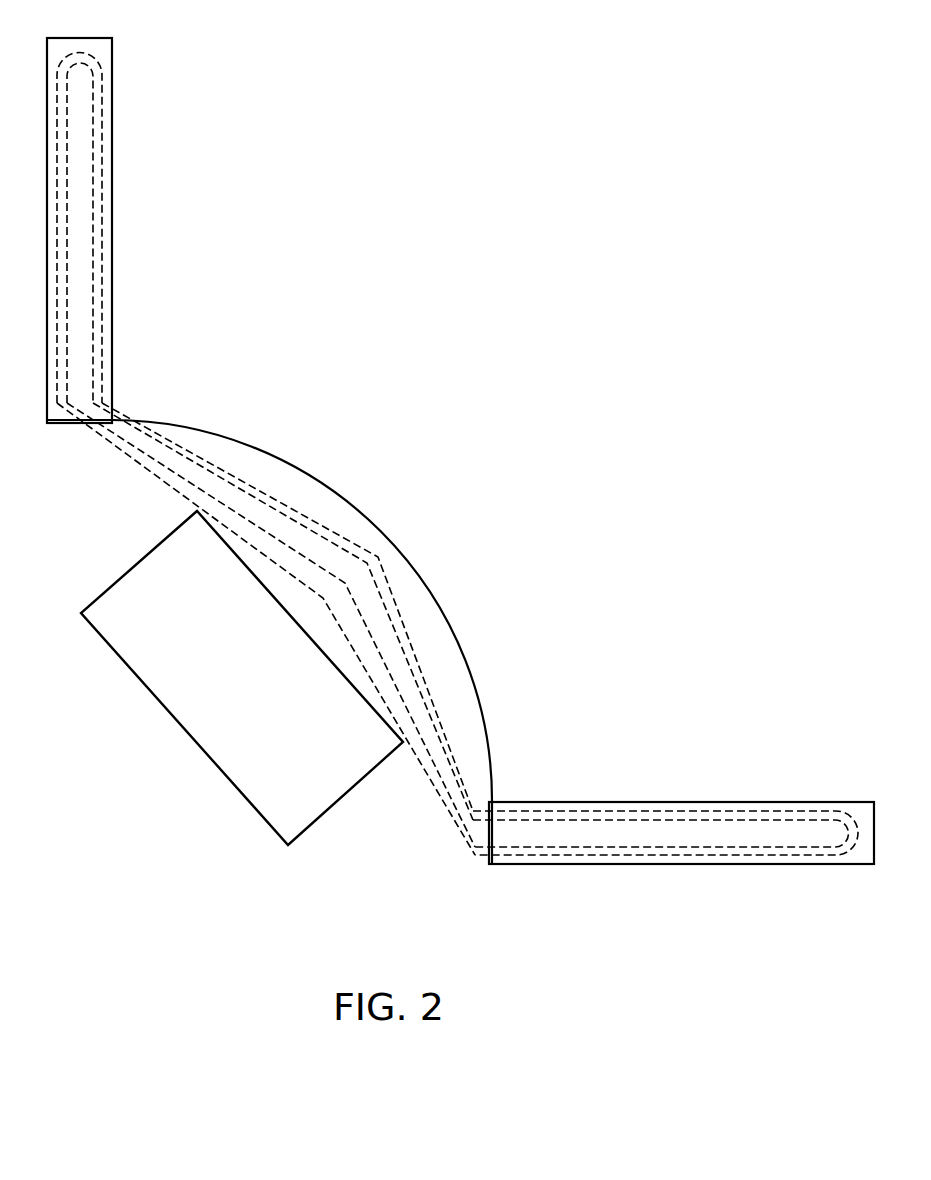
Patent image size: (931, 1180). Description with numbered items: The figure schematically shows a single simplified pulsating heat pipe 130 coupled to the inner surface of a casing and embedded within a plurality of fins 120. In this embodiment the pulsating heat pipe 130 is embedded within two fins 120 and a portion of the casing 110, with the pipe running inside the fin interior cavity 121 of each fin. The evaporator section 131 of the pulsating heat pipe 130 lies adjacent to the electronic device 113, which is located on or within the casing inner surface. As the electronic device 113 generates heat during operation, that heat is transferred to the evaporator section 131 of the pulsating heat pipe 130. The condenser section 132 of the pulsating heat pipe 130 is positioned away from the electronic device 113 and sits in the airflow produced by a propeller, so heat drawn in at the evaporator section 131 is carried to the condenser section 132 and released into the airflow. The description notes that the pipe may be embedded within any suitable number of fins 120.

The casing 110 is at (307, 472).
The electronic device 113 is at (167, 717).
The fins 120 is at (115, 187).
The fin interior cavity 121 is at (95, 253).
The pulsating heat pipe 130 is at (422, 732).
The evaporator section 131 is at (377, 562).
The condenser section 132 is at (692, 805).